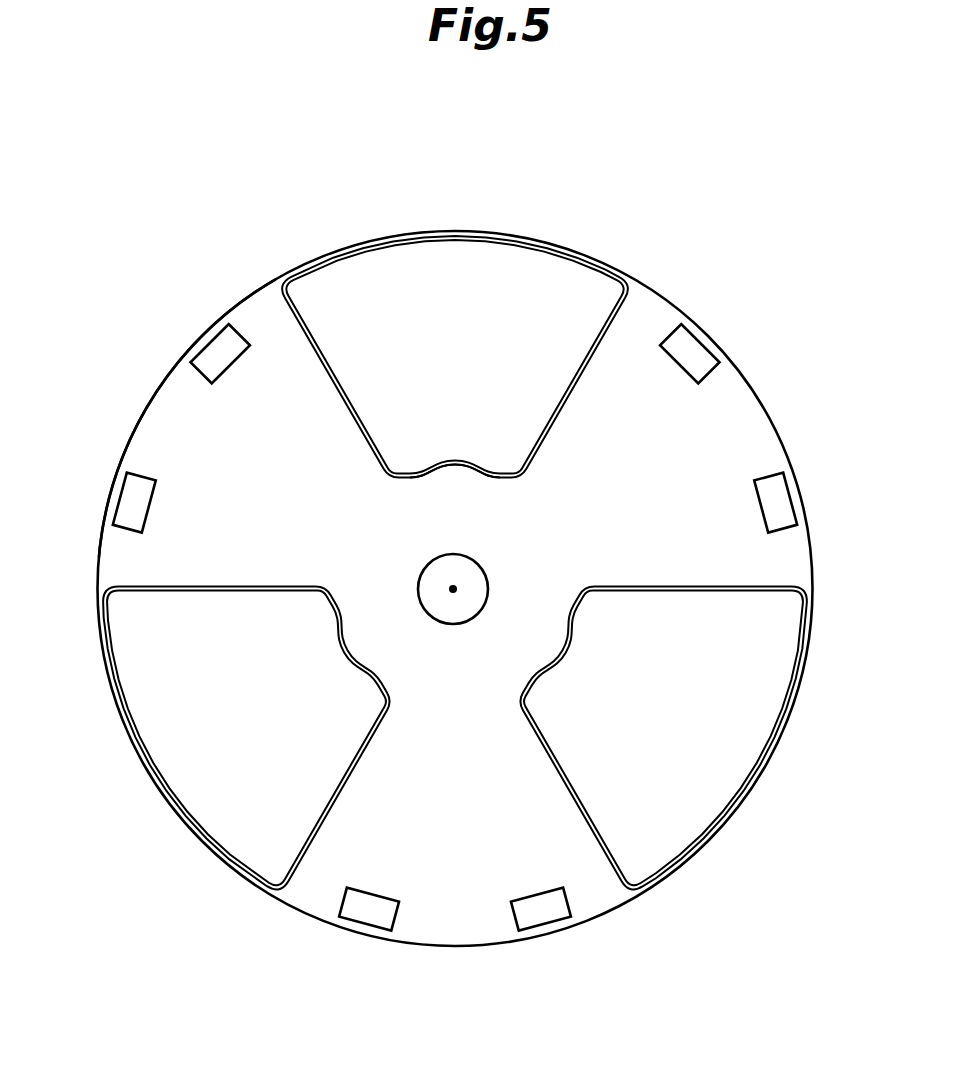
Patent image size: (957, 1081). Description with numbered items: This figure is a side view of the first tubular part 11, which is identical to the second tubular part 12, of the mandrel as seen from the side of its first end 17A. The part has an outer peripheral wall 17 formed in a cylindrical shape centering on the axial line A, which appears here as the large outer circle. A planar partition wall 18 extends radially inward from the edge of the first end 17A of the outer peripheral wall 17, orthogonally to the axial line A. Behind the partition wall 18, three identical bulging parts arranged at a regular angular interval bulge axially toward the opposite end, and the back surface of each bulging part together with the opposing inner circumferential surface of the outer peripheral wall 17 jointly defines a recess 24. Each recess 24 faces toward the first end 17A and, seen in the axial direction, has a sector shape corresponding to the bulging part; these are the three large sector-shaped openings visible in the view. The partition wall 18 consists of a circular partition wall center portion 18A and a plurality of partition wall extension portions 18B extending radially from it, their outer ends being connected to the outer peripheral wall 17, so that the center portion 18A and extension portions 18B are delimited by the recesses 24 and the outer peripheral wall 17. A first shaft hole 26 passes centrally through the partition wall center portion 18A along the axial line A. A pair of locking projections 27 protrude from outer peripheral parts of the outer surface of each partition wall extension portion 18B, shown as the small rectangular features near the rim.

The first tubular part 11 is at (455, 552).
The second tubular part 12 is at (635, 236).
The outer peripheral wall 17 is at (155, 397).
The first end 17A is at (130, 428).
The partition wall 18 is at (454, 570).
The partition wall center portion 18A is at (362, 625).
The partition wall extension portion 18B is at (455, 357).
The recess 24 is at (469, 465).
The first shaft hole 26 is at (455, 603).
The locking projection 27 is at (694, 358).
The axial line A is at (455, 587).